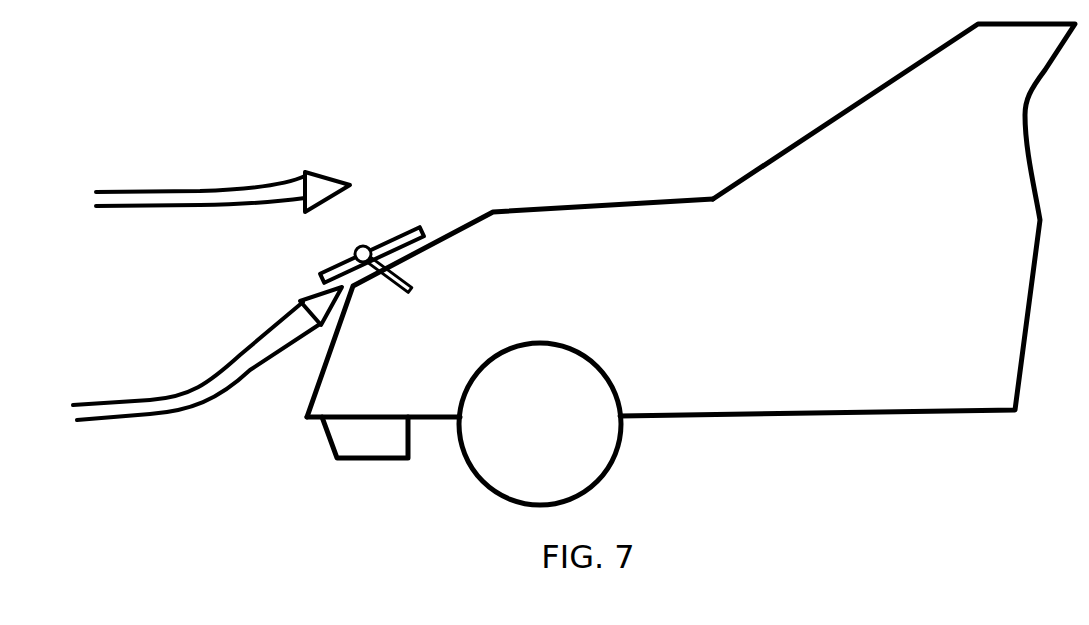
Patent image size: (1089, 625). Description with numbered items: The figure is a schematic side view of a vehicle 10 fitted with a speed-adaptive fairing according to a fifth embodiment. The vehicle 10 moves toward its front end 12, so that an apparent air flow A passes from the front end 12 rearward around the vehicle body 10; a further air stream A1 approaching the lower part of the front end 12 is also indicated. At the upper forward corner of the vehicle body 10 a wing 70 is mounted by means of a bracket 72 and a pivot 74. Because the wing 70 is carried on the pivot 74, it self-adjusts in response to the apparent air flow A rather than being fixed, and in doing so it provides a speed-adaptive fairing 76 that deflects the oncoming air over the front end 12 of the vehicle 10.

The vehicle 10 is at (892, 279).
The front end 12 is at (484, 299).
The wing 70 is at (340, 268).
The bracket 72 is at (412, 292).
The pivot 74 is at (357, 248).
The speed-adaptive fairing 76 is at (258, 162).
The apparent air flow A is at (169, 190).
The lower incoming airflow A1 is at (178, 407).